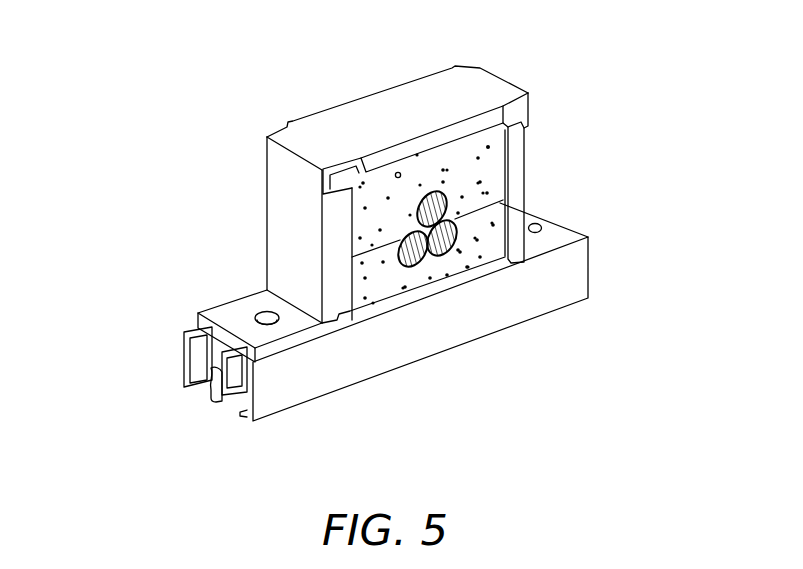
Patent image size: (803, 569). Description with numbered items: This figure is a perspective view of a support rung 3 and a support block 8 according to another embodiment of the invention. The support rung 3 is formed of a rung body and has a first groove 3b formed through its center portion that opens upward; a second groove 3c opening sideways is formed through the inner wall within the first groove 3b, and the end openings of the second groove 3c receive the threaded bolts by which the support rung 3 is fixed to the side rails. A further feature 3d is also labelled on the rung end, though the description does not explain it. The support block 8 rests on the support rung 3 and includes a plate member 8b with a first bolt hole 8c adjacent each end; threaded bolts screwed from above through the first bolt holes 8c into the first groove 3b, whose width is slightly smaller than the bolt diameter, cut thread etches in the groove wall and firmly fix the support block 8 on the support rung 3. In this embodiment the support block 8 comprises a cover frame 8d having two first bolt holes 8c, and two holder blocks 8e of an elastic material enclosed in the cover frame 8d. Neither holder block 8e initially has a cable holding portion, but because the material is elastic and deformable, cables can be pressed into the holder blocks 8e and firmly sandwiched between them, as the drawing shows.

The support rung 3 is at (557, 311).
The first groove 3b is at (185, 375).
The second groove 3c is at (213, 400).
The engaging piece 3d is at (186, 336).
The support block 8 is at (526, 92).
The plate member 8b is at (218, 310).
The first bolt hole 8c is at (262, 315).
The cover frame 8d is at (313, 132).
The holder block 8e is at (490, 240).